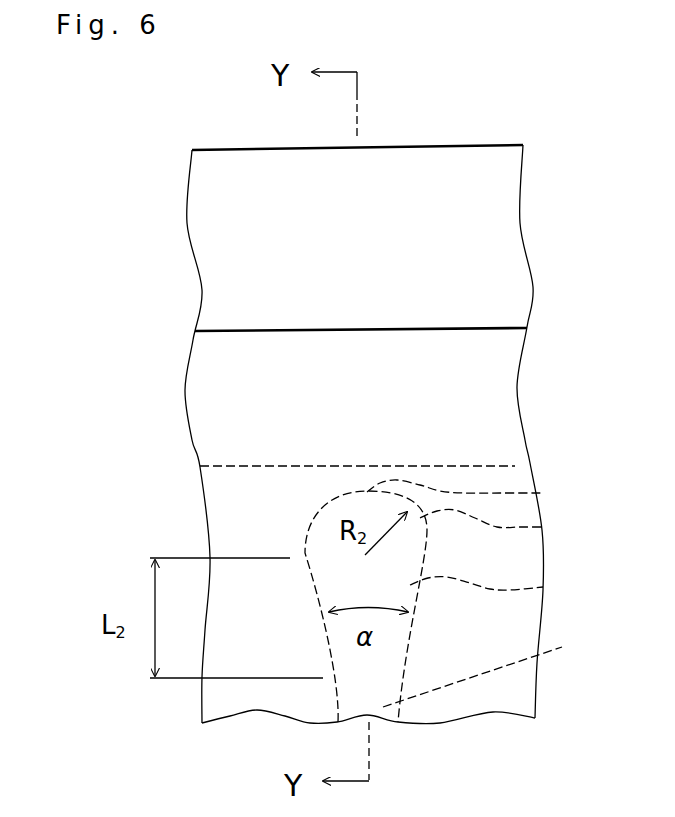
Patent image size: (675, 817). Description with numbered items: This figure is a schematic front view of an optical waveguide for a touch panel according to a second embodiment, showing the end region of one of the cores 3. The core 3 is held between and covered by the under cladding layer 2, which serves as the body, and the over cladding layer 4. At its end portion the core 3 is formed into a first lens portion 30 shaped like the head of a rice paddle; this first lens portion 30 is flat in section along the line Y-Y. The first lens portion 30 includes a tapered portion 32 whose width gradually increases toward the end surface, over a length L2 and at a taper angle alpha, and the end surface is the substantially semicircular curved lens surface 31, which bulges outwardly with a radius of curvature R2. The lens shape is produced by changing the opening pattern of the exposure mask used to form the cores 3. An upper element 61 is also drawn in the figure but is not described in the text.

The second member 61 is at (503, 236).
The under cladding layer 2 is at (510, 470).
The curved lens surface 31 is at (541, 493).
The first lens portion 30 is at (541, 527).
The tapered portion 32 is at (543, 587).
The core 3 is at (486, 670).
The over cladding layer 4 is at (510, 698).